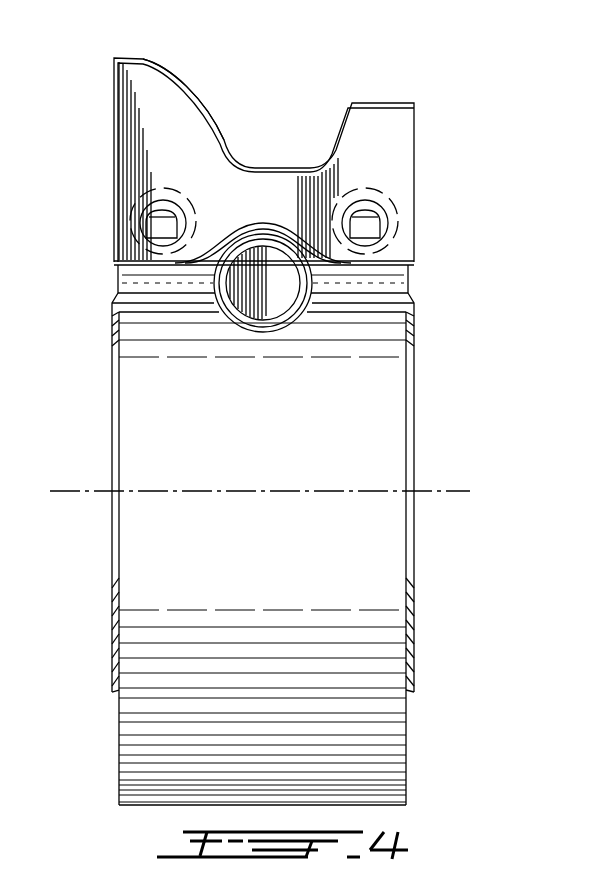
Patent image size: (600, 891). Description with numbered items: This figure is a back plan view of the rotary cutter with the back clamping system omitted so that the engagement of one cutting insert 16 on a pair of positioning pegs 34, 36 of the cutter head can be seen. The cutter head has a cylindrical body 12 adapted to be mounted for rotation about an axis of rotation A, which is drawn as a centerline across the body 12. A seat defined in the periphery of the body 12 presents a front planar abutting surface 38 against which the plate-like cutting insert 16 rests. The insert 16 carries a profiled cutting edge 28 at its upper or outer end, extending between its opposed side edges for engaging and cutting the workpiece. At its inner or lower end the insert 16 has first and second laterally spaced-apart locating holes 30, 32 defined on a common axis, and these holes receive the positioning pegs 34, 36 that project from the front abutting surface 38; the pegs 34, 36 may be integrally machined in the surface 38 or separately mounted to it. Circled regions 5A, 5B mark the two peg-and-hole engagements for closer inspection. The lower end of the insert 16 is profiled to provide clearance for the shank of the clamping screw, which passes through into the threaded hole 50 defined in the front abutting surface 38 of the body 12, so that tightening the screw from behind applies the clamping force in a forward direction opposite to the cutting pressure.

The cylindrical body 12 is at (380, 418).
The cutting insert 16 is at (415, 126).
The cutting edge 28 is at (170, 68).
The first locating hole 30 is at (163, 204).
The second locating hole 32 is at (365, 204).
The positioning peg 34 is at (162, 230).
The positioning peg 36 is at (367, 230).
The front abutting surface 38 is at (382, 286).
The threaded hole 50 is at (266, 290).
The detail view region 5A is at (136, 199).
The detail view region 5B is at (393, 199).
The axis of rotation A is at (462, 494).